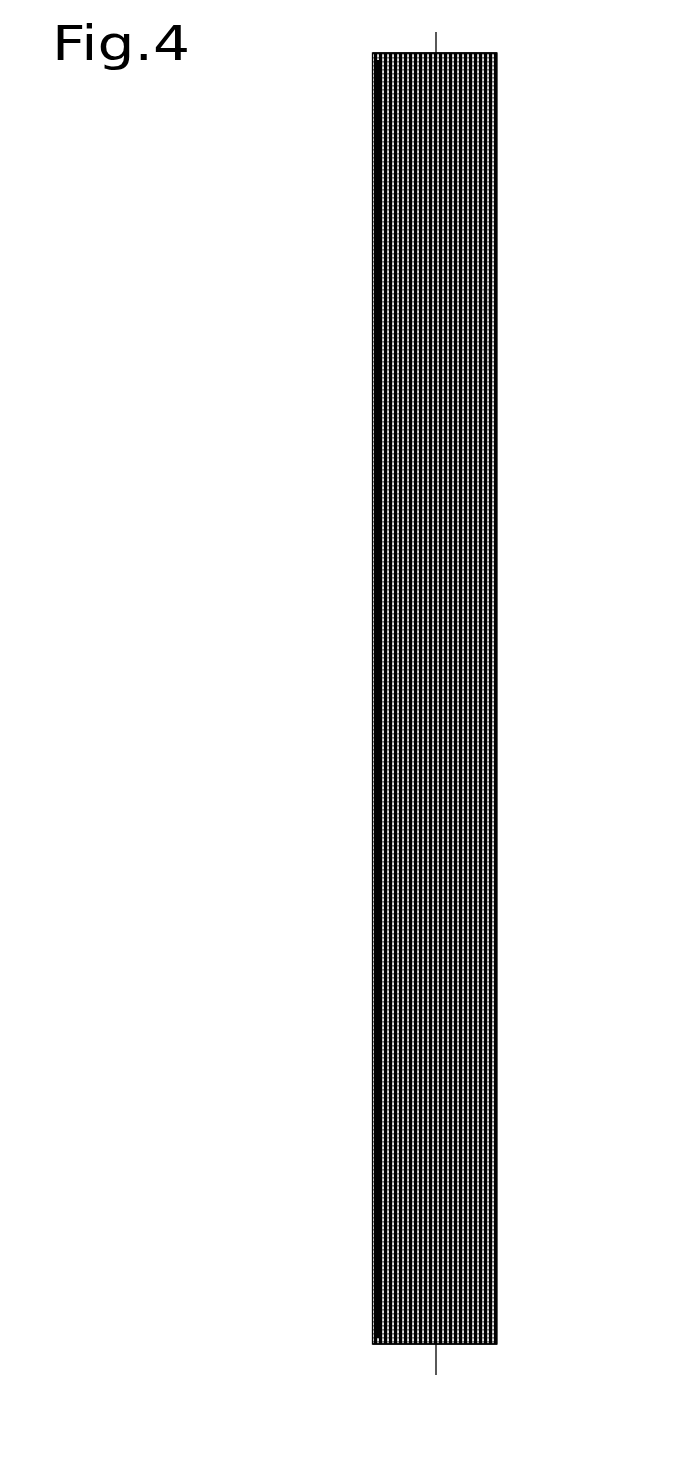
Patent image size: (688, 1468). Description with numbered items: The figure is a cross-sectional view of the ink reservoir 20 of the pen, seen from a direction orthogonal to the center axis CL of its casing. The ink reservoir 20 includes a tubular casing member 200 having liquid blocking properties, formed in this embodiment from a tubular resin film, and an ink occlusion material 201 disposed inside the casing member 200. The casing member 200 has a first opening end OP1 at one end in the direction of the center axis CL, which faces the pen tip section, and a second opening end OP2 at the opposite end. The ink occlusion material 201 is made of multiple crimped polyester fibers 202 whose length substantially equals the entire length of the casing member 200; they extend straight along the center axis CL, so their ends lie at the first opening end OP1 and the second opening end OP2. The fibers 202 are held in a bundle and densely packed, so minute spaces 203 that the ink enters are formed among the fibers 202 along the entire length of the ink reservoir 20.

The ink reservoir 20 is at (368, 698).
The casing member 200 is at (372, 442).
The ink occlusion material 201 is at (379, 528).
The fibers 202 is at (497, 367).
The minute spaces 203 is at (497, 315).
The first opening end OP1 is at (397, 1349).
The second opening end OP2 is at (396, 50).
The center axis CL is at (438, 40).